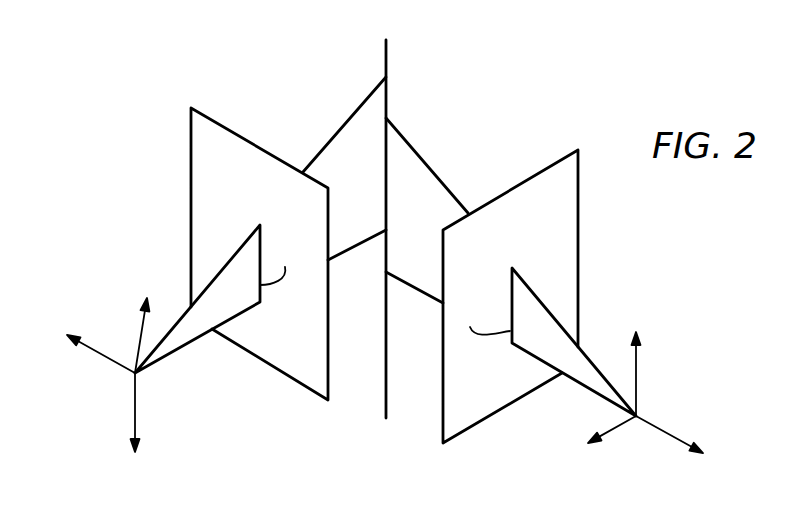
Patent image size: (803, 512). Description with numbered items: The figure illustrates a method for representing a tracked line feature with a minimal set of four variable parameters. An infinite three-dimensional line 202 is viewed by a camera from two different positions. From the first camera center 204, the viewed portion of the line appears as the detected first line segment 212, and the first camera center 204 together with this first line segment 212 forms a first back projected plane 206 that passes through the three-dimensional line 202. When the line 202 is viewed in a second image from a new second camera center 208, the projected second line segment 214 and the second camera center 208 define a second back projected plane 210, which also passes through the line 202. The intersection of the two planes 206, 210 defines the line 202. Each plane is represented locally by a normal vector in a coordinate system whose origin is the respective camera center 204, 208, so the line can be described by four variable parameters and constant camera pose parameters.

The 3D line (L) 202 is at (386, 365).
The first camera center (O1) 204 is at (135, 373).
The back projected plane (π1) 206 is at (348, 120).
The second camera center (O2) 208 is at (636, 416).
The second back projected plane (π2) 210 is at (435, 174).
The detected line segment l1 212 is at (260, 238).
The line segment l2 214 is at (510, 283).